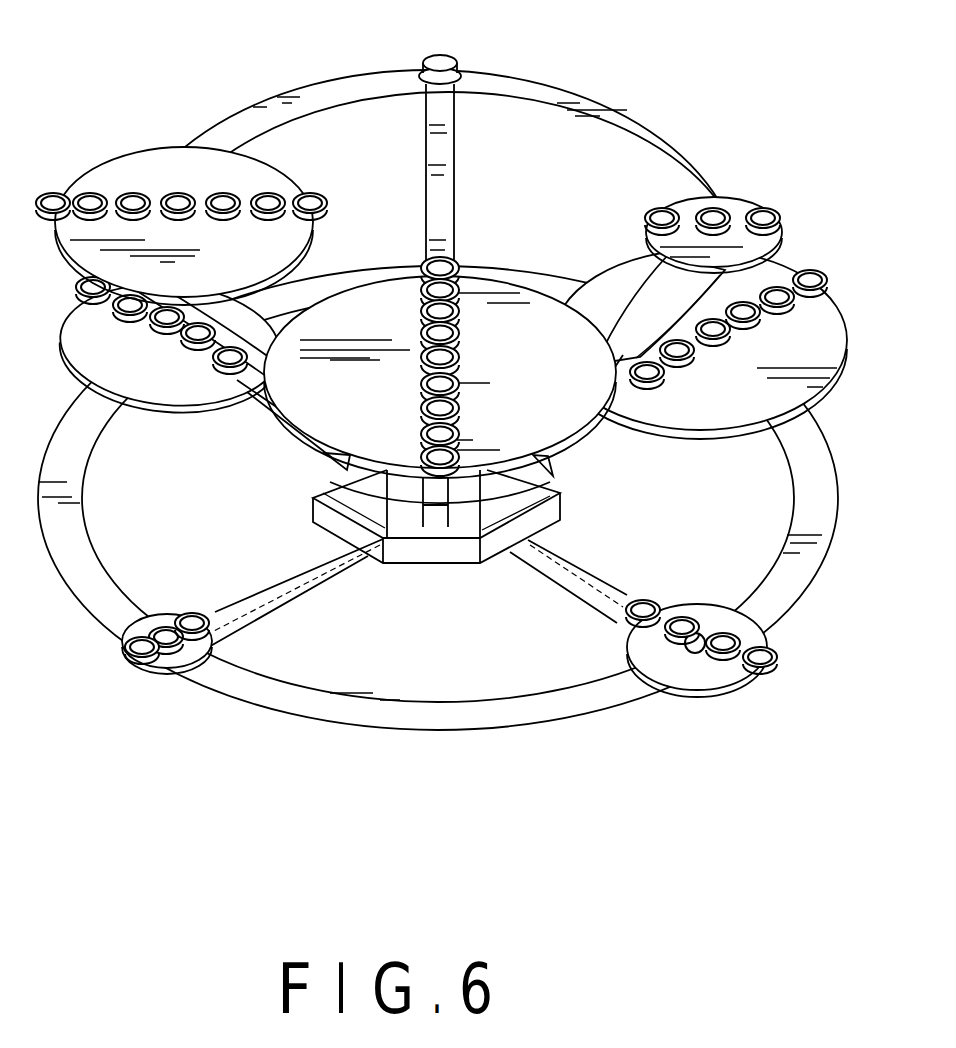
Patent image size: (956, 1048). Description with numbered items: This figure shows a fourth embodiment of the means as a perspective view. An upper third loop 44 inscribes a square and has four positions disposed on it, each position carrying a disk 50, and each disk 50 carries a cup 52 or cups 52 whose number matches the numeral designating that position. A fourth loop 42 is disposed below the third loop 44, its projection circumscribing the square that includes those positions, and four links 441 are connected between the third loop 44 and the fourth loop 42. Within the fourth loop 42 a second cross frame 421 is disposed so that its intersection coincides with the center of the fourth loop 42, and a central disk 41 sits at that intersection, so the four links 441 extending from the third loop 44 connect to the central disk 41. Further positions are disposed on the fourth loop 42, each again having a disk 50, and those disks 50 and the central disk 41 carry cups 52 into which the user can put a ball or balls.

The central disk 41 is at (446, 550).
The fourth loop 42 is at (455, 714).
The second cross frame 421 is at (596, 582).
The third loop 44 is at (390, 72).
The links 441 is at (446, 201).
The disk 50 is at (182, 167).
The cup 52 is at (86, 196).